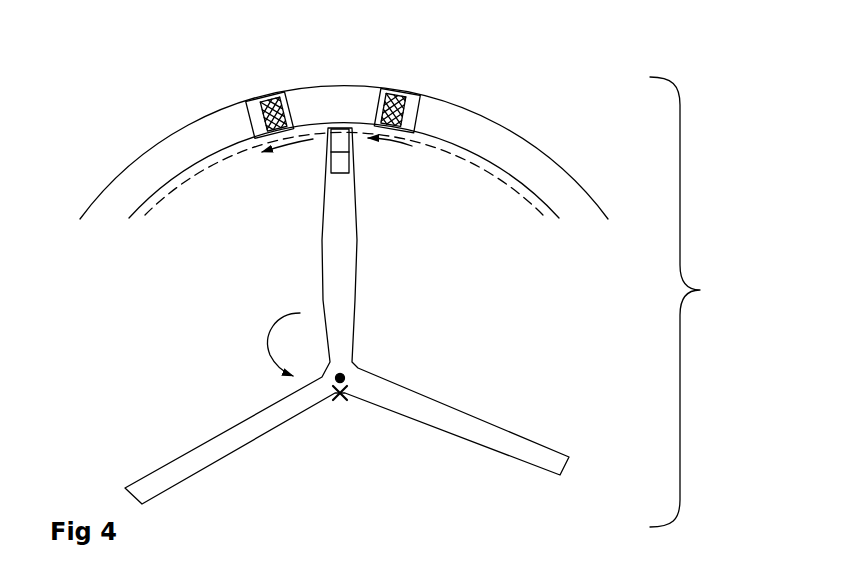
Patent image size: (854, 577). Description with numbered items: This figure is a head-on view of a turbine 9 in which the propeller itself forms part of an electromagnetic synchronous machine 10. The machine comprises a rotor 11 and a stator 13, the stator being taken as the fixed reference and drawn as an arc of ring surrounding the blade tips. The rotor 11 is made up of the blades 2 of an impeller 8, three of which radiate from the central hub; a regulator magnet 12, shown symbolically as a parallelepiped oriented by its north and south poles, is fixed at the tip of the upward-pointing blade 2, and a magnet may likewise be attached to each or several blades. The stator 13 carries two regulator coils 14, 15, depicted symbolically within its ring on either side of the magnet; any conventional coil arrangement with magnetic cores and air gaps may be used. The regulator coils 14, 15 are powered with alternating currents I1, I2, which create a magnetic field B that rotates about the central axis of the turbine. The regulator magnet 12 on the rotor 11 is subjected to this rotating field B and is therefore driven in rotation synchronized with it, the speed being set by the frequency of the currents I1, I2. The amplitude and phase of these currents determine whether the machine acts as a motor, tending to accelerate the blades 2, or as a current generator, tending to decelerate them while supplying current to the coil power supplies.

The blade 2 is at (350, 300).
The impeller 8 is at (232, 208).
The turbine 9 is at (687, 302).
The electromagnetic synchronous machine 10 is at (423, 153).
The rotor 11 is at (387, 349).
The regulator magnet 12 is at (333, 162).
The stator 13 is at (563, 163).
The regulator coil 14 is at (405, 87).
The regulator coil 15 is at (255, 115).
The alternating current I1 is at (419, 102).
The alternating current I2 is at (291, 98).
The magnetic field B is at (337, 152).